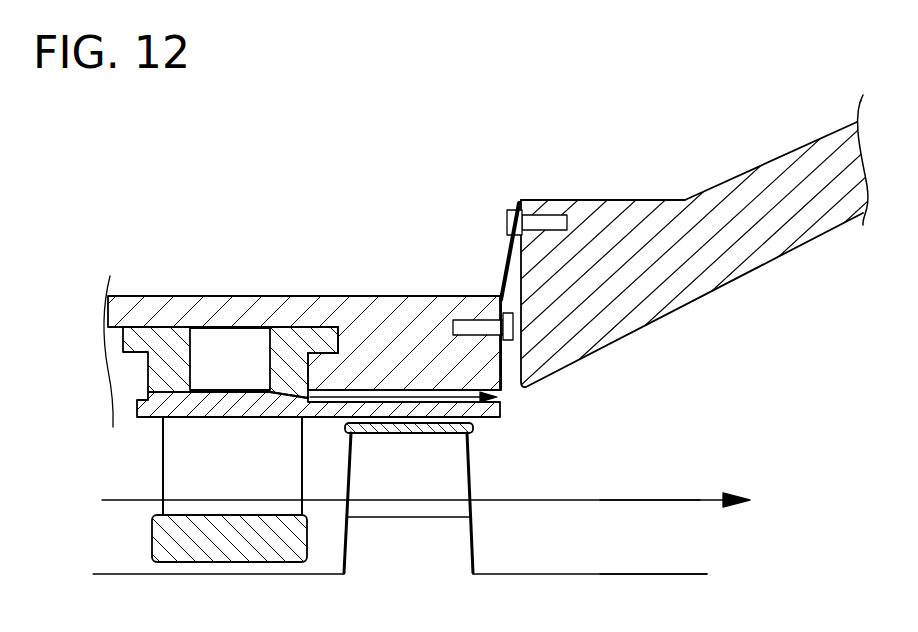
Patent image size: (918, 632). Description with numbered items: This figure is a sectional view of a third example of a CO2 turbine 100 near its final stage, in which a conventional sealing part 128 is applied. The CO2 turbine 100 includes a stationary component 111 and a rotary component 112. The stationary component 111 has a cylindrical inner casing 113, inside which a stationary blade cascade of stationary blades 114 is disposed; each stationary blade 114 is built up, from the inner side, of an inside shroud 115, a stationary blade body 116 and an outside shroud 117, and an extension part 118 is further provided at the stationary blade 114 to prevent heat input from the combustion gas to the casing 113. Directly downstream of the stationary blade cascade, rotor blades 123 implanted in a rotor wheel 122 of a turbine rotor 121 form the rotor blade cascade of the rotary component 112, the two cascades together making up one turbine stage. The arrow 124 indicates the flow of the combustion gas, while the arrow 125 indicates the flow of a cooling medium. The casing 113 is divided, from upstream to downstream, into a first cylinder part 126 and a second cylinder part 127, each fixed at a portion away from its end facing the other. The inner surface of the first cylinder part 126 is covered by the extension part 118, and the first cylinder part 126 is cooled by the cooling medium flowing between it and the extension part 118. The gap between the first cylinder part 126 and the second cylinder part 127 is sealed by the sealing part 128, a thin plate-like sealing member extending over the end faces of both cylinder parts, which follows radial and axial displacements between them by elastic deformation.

The CO2 turbine 100 is at (153, 212).
The stationary component 111 is at (760, 317).
The rotary component 112 is at (760, 575).
The inner casing 113 is at (78, 304).
The stationary blade 114 is at (153, 480).
The inside shroud 115 is at (160, 535).
The stationary blade body 116 is at (173, 452).
The outside shroud 117 is at (163, 413).
The extension part 118 is at (503, 413).
The turbine rotor 121 is at (623, 588).
The rotor wheel 122 is at (470, 537).
The rotor blade 123 is at (470, 477).
The flow of the combustion gas 124 is at (647, 498).
The flow of a cooling medium 125 is at (507, 393).
The first cylinder part 126 is at (217, 297).
The second cylinder part 127 is at (637, 218).
The sealing part 128 is at (489, 268).